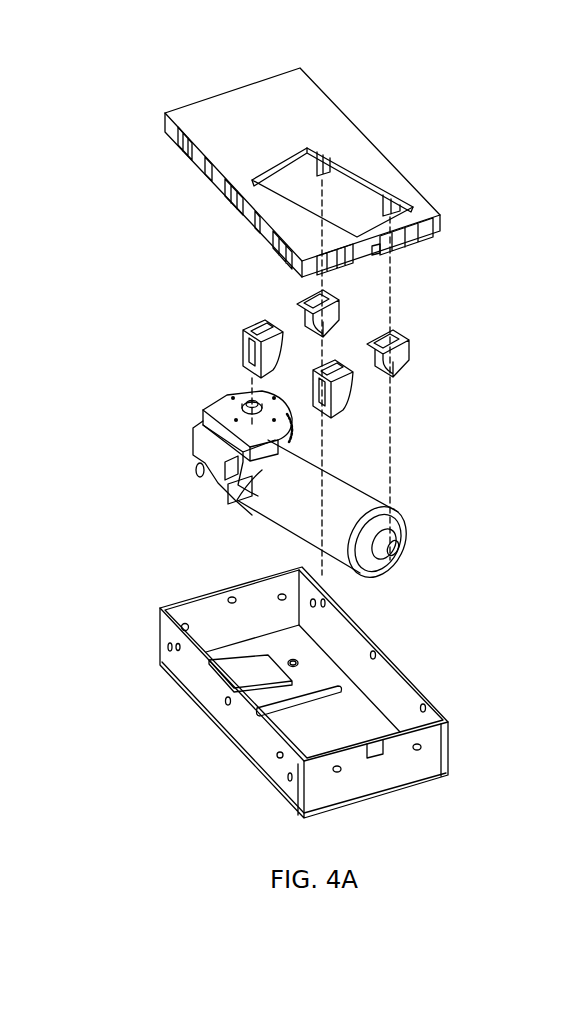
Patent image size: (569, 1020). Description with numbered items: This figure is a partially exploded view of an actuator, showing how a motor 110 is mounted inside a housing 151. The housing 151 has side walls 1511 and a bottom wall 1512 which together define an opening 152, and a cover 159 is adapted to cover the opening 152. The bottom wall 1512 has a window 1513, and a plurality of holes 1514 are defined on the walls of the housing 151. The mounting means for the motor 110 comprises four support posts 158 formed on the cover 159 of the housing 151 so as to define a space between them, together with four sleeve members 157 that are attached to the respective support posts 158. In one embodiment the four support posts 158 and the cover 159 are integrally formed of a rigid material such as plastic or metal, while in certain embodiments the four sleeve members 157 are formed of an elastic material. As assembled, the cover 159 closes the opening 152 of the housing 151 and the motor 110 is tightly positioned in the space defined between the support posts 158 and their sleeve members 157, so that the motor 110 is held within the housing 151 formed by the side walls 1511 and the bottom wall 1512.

The motor 110 is at (347, 498).
The housing 151 is at (295, 683).
The opening 152 is at (347, 678).
The sleeve member 157 is at (250, 331).
The support post 158 is at (390, 203).
The cover 159 is at (373, 163).
The side wall 1511 is at (217, 700).
The bottom wall 1512 is at (323, 723).
The window 1513 is at (250, 677).
The hole 1514 is at (163, 652).